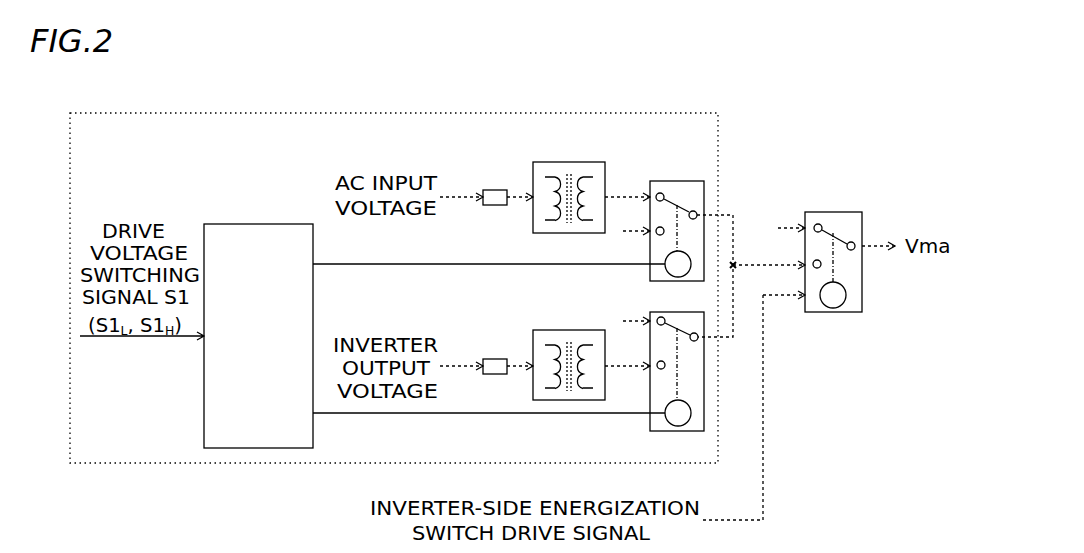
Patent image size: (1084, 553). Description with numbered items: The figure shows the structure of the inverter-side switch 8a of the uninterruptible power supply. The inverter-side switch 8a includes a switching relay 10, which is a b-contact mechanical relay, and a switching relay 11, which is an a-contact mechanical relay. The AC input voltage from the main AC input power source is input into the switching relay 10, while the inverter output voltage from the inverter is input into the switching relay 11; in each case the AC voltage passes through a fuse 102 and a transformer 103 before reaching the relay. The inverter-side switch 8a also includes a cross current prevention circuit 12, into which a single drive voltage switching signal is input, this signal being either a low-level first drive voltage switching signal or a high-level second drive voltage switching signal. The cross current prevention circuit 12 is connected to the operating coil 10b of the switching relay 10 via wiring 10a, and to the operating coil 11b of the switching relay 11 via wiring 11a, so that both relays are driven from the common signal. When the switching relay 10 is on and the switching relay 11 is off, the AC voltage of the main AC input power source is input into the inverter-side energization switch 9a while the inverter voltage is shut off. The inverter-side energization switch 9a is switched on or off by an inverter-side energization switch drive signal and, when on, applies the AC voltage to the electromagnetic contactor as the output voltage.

The inverter-side switch 8a is at (175, 112).
The cross current prevention circuit 12 is at (248, 224).
The fuse 102 is at (500, 190).
The transformer 103 is at (577, 162).
The switching relay 10 is at (647, 213).
The wiring 10a is at (497, 267).
The operating coil 10b is at (651, 258).
The switching relay 11 is at (699, 356).
The wiring 11a is at (497, 416).
The operating coil 11b is at (692, 414).
The inverter-side energization switch 9a is at (840, 212).